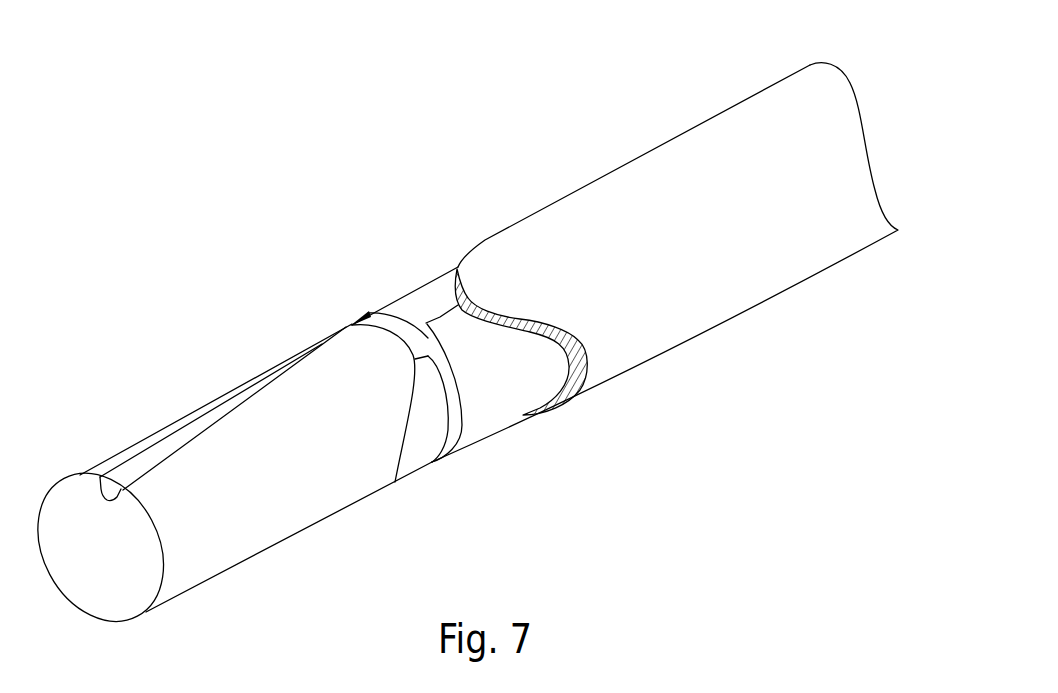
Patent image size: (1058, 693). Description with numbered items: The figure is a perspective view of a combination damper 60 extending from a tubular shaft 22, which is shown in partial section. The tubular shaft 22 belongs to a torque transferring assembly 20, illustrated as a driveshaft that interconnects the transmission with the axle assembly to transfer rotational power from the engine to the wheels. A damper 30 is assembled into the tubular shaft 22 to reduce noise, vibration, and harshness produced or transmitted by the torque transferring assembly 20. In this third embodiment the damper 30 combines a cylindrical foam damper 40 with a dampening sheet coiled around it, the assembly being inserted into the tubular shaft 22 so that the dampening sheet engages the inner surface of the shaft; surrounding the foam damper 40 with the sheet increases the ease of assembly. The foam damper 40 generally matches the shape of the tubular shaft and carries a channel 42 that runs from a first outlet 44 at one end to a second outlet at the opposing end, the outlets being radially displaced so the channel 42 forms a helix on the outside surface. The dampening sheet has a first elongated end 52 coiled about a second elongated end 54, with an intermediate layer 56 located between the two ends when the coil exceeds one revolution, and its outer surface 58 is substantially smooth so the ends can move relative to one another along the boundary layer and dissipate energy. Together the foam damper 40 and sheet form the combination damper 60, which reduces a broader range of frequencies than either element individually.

The torque transferring assembly 20 is at (488, 133).
The tubular shaft 22 is at (648, 332).
The damper 30 is at (338, 220).
The foam damper 40 is at (205, 565).
The channel 42 is at (253, 391).
The first outlet 44 is at (93, 485).
The first elongated end 52 is at (441, 315).
The second elongated end 54 is at (395, 482).
The intermediate layer 56 is at (428, 338).
The outer surface 58 is at (505, 408).
The combination damper 60 is at (434, 482).